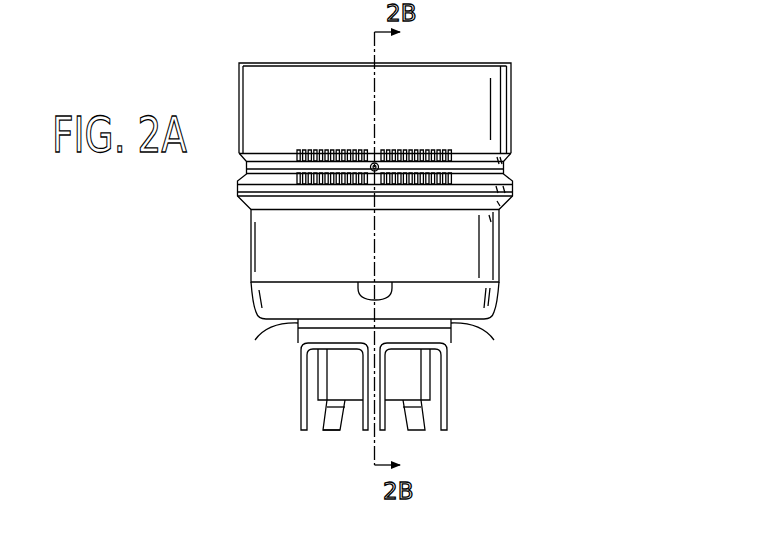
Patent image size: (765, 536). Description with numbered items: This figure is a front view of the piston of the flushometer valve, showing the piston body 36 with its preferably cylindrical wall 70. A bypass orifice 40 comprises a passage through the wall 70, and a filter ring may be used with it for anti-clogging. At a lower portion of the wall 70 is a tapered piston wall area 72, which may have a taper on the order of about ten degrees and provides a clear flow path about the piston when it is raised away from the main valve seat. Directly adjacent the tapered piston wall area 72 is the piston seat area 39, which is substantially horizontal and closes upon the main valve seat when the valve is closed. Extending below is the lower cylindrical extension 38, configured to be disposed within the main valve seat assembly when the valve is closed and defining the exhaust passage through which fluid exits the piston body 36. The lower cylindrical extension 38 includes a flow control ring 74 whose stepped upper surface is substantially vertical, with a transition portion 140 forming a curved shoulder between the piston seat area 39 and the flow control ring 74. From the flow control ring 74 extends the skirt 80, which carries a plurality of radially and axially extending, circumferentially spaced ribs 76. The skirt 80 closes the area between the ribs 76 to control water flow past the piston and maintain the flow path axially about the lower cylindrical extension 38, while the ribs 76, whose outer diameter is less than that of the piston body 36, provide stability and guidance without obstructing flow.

The piston body 36 is at (570, 106).
The lower cylindrical extension 38 is at (300, 390).
The piston seat area 39 is at (255, 340).
The bypass orifice 40 is at (371, 164).
The wall 70 is at (252, 247).
The tapered piston wall area 72 is at (470, 301).
The flow control ring 74 is at (451, 335).
The ribs 76 is at (447, 407).
The skirt 80 is at (353, 390).
The transition portion 140 is at (455, 328).